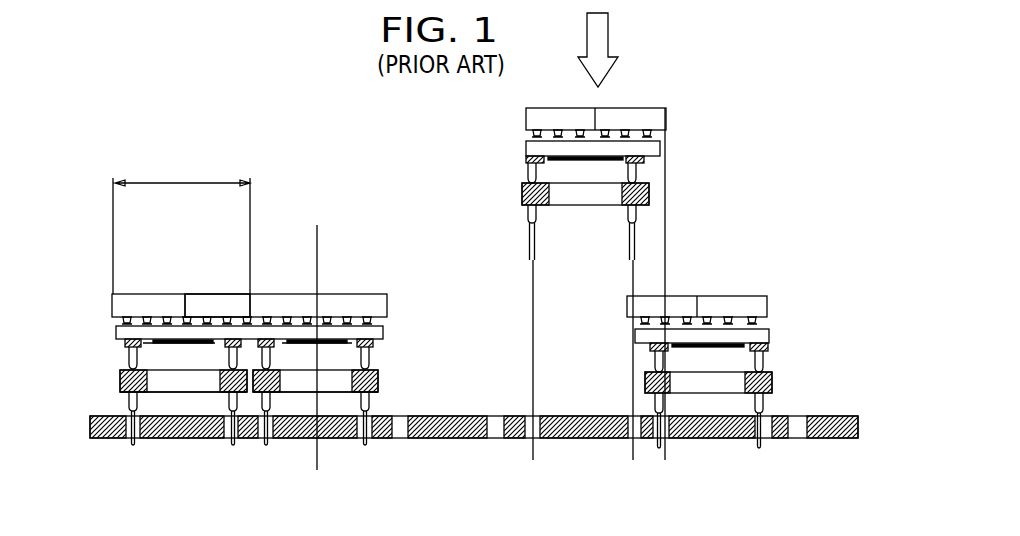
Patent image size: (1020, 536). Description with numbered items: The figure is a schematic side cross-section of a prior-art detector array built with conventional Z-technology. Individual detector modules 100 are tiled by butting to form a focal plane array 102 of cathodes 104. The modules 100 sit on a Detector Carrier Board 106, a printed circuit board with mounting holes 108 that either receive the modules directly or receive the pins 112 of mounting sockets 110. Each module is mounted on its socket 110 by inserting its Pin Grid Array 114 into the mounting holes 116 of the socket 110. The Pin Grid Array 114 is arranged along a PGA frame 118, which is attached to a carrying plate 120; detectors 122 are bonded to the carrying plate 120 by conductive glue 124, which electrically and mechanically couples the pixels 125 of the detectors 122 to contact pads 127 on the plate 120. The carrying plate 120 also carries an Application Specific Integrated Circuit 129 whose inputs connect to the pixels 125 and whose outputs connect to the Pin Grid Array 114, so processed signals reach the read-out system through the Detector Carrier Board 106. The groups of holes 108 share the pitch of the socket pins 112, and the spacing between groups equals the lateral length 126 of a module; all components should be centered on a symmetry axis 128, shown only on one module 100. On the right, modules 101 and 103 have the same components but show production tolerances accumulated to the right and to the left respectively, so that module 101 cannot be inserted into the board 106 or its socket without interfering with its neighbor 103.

The detector module 100 is at (117, 305).
The module 101 is at (612, 118).
The focal plane array 102 is at (117, 300).
The module 103 is at (712, 298).
The cathodes 104 is at (215, 293).
The Detector Carrier Board 106 is at (186, 430).
The mounting holes 108 is at (232, 446).
The mounting socket 110 is at (120, 378).
The pins 112 is at (130, 446).
The Pin Grid Array 114 is at (124, 344).
The mounting holes 116 is at (118, 390).
The PGA frame 118 is at (160, 348).
The carrying plate 120 is at (118, 332).
The detector 122 is at (193, 294).
The conductive glue 124 is at (245, 318).
The pixels 125 is at (158, 320).
The lateral length 126 is at (185, 183).
The contact pads 127 is at (152, 322).
The symmetry axis 128 is at (318, 265).
The Application Specific Integrated Circuit 129 is at (186, 348).